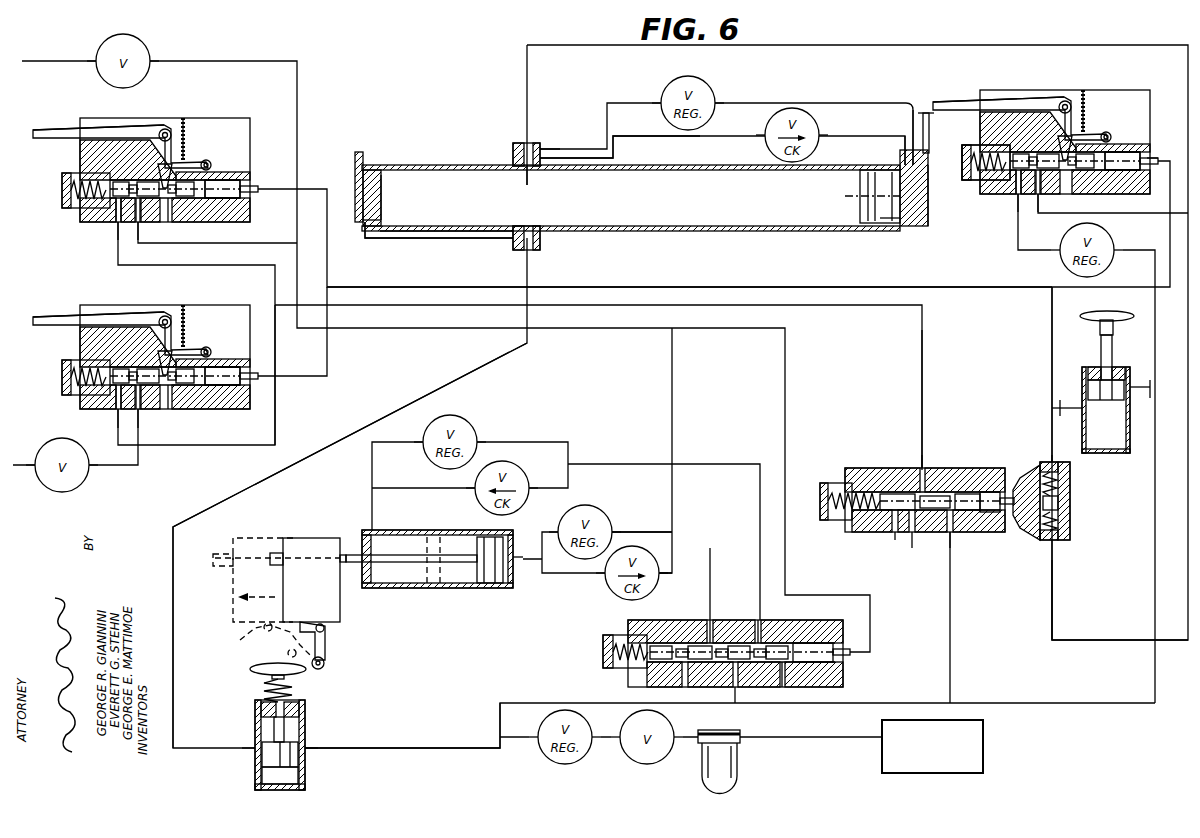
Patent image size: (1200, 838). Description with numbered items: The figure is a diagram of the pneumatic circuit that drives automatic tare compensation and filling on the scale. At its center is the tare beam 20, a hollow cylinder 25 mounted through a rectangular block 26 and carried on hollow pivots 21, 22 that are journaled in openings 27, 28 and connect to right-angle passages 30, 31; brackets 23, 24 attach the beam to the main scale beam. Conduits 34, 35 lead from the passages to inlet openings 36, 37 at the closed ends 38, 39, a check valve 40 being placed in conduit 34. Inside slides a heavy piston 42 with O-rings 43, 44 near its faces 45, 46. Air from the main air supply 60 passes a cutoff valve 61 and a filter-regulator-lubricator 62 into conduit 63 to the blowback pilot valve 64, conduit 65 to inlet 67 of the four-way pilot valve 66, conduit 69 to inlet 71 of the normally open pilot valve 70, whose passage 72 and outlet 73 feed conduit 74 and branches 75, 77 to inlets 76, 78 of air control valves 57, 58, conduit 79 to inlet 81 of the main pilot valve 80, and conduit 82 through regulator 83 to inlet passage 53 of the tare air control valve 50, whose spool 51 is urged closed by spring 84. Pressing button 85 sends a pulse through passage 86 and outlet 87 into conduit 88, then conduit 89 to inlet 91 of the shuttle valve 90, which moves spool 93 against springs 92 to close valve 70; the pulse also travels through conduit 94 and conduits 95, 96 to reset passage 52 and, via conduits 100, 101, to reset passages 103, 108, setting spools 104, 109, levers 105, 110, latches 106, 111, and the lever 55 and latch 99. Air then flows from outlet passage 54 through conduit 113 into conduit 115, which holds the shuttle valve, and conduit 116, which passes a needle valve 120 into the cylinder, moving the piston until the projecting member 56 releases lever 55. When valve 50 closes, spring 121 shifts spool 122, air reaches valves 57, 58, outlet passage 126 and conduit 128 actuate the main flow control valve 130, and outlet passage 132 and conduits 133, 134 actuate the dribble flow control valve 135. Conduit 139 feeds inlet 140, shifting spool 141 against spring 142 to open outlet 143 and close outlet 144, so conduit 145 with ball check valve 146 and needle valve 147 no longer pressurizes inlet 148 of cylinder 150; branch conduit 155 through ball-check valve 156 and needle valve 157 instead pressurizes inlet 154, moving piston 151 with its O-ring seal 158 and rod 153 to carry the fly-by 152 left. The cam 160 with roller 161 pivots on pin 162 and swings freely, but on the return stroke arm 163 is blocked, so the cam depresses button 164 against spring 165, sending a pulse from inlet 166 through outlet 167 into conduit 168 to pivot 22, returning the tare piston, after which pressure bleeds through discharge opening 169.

The tare beam 20 is at (670, 189).
The pivot 21 is at (535, 140).
The pivot 22 is at (533, 265).
The bracket 23 is at (362, 155).
The bracket 24 is at (930, 225).
The hollow cylinder 25 is at (735, 232).
The rectangular block 26 is at (505, 155).
The opening 27 is at (543, 150).
The opening 28 is at (542, 246).
The right-angle passage 30 is at (532, 178).
The right-angle passage 31 is at (513, 244).
The conduit 34 is at (622, 157).
The conduit 35 is at (452, 240).
The inlet opening 36 is at (905, 160).
The inlet opening 37 is at (383, 212).
The closed end 38 is at (930, 210).
The closed end 39 is at (383, 186).
The check valve 40 is at (816, 128).
The piston 42 is at (862, 213).
The O-ring 43 is at (855, 186).
The O-ring 44 is at (882, 228).
The piston face 45 is at (852, 216).
The piston face 46 is at (902, 228).
The air control valve 50 is at (1056, 131).
The spool 51 is at (1122, 160).
The reset passage 52 is at (1148, 148).
The inlet air passage 53 is at (1016, 210).
The outlet air passage 54 is at (1041, 210).
The lever 55 is at (956, 102).
The projecting member 56 is at (932, 118).
The air control valve 57 is at (143, 348).
The air control valve 58 is at (160, 163).
The main air supply 60 is at (984, 748).
The cutoff valve 61 is at (645, 766).
The filter-regulator-lubricator 62 is at (568, 766).
The conduit 63 is at (410, 748).
The blowback pilot valve 64 is at (290, 730).
The conduit 65 is at (745, 690).
The four-way pilot valve 66 is at (846, 684).
The inlet 67 is at (733, 690).
The conduit 69 is at (950, 622).
The pilot valve 70 is at (902, 499).
The inlet 71 is at (952, 546).
The passage 72 is at (912, 550).
The outlet 73 is at (921, 462).
The conduit 74 is at (922, 332).
The conduit 75 is at (275, 364).
The inlet 76 is at (116, 412).
The conduit 77 is at (275, 268).
The inlet 78 is at (116, 228).
The conduit 79 is at (1150, 394).
The main pilot valve 80 is at (1118, 370).
The inlet 81 is at (1140, 384).
The conduit 82 is at (1147, 350).
The regulator 83 is at (1062, 260).
The spring 84 is at (966, 178).
The button 85 is at (1106, 310).
The passage 86 is at (1098, 400).
The outlet 87 is at (1073, 423).
The conduit 88 is at (1066, 406).
The conduit 89 is at (1051, 446).
The shuttle valve 90 is at (1079, 496).
The inlet 91 is at (1070, 466).
The springs 92 is at (1068, 484).
The pilot valve spool 93 is at (1062, 502).
The conduit 94 is at (1052, 310).
The conduit 95 is at (1155, 283).
The conduit 96 is at (816, 287).
The latch 99 is at (1095, 128).
The conduit 100 is at (327, 376).
The conduit 101 is at (327, 282).
The reset passage 103 is at (215, 366).
The spool 104 is at (190, 392).
The lever 105 is at (63, 315).
The latch 106 is at (190, 345).
The reset passage 108 is at (232, 182).
The spool 109 is at (190, 205).
The lever 110 is at (63, 128).
The latch 111 is at (190, 158).
The conduit 113 is at (1125, 213).
The conduit 115 is at (1123, 620).
The conduit 116 is at (926, 45).
The needle valve 120 is at (710, 94).
The spring 121 is at (826, 522).
The spool 122 is at (896, 538).
The outlet passage 126 is at (140, 416).
The conduit 128 is at (138, 466).
The main flow control valve 130 is at (80, 484).
The outlet passage 132 is at (139, 232).
The conduit 133 is at (290, 243).
The conduit 134 is at (297, 61).
The dribble flow control valve 135 is at (143, 56).
The conduit 139 is at (393, 330).
The inlet 140 is at (729, 625).
The spool 141 is at (728, 640).
The spring 142 is at (606, 657).
The outlet 143 is at (709, 616).
The outlet 144 is at (760, 614).
The conduit 145 is at (706, 464).
The ball check valve 146 is at (520, 472).
The needle valve 147 is at (472, 430).
The inlet 148 is at (372, 526).
The cylinder 150 is at (434, 562).
The piston 151 is at (488, 586).
The fly-by 152 is at (279, 567).
The rod 153 is at (385, 564).
The inlet 154 is at (523, 566).
The branch conduit 155 is at (672, 432).
The ball-check valve 156 is at (605, 512).
The needle valve 157 is at (614, 592).
The O-ring seal 158 is at (480, 540).
The cam 160 is at (296, 648).
The roller 161 is at (326, 664).
The pin 162 is at (284, 603).
The arm 163 is at (246, 640).
The button 164 is at (250, 670).
The spring 165 is at (262, 692).
The inlet 166 is at (310, 746).
The outlet 167 is at (254, 750).
The conduit 168 is at (496, 345).
The discharge opening 169 is at (280, 790).